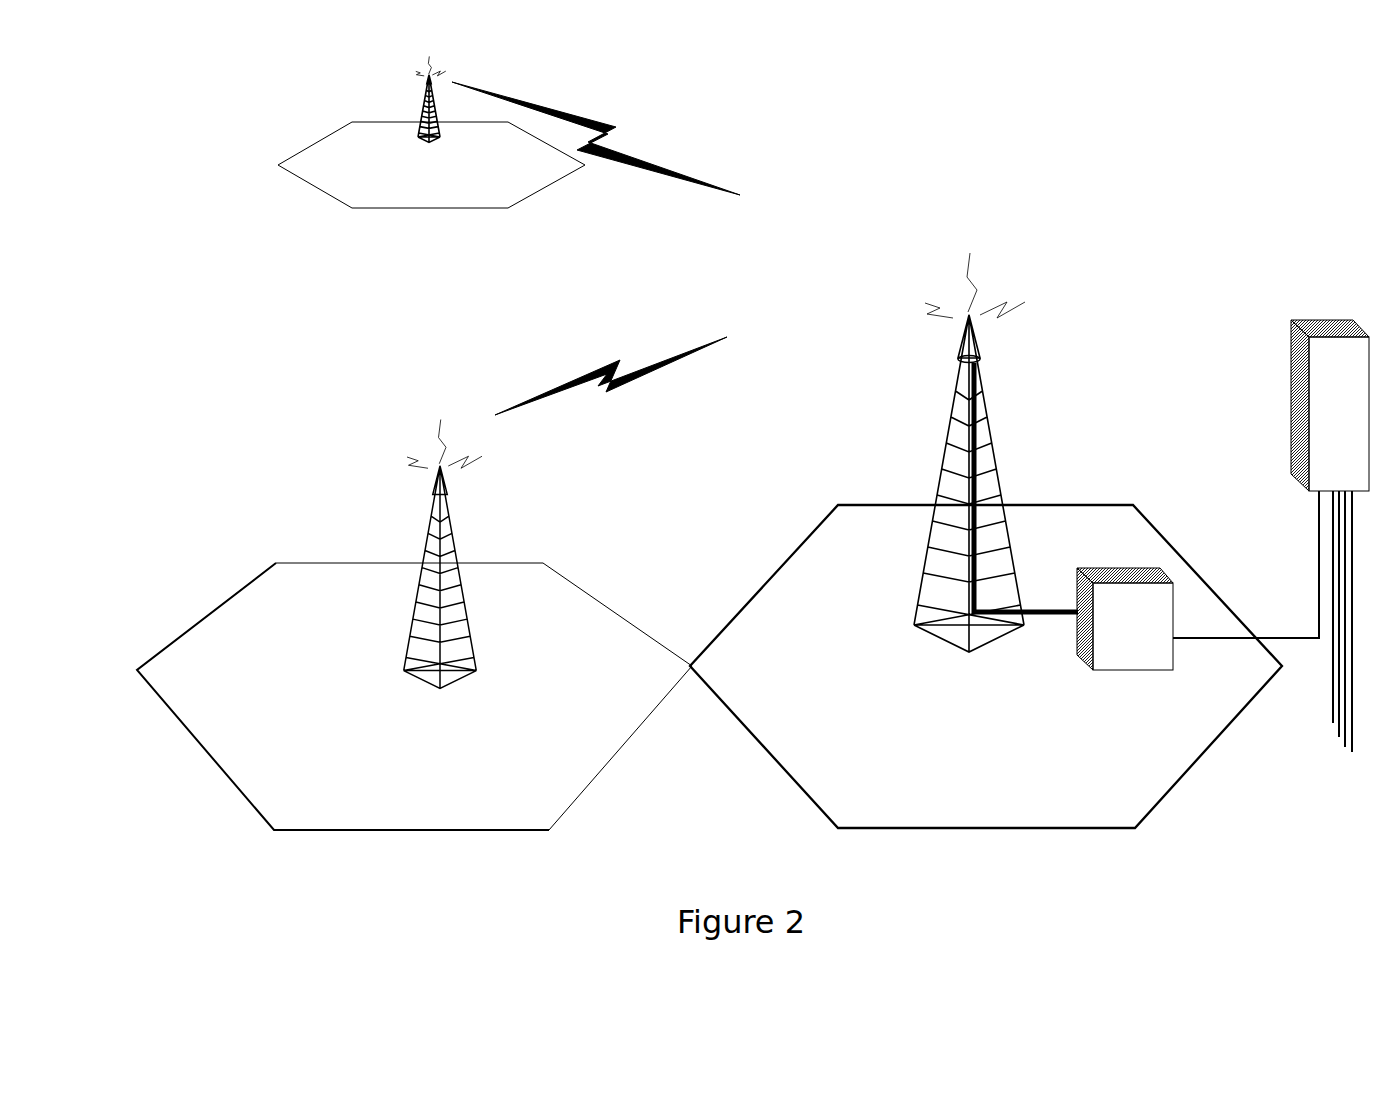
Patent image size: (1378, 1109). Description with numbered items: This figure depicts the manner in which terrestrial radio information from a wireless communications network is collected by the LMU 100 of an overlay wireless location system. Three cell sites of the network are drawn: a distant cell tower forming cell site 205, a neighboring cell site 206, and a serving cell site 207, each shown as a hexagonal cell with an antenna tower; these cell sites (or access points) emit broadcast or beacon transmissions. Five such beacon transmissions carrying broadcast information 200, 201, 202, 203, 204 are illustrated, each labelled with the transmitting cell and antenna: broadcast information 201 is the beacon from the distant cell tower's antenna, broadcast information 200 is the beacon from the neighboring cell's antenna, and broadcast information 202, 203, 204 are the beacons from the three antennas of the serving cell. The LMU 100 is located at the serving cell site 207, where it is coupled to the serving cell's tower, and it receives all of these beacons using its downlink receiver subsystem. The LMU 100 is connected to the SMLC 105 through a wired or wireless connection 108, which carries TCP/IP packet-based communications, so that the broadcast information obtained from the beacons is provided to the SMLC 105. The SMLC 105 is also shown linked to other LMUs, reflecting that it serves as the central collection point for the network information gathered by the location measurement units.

The broadcast information 200 is at (613, 423).
The broadcast information 201 is at (596, 117).
The broadcast information 202 is at (987, 139).
The broadcast information 203 is at (834, 279).
The broadcast information 204 is at (1134, 280).
The cell site 205 is at (431, 132).
The cell site 206 is at (414, 625).
The cell site 207 is at (986, 540).
The LMU 100 is at (1125, 619).
The SMLC 105 is at (1334, 549).
The wired or wireless connection 108 is at (1246, 564).